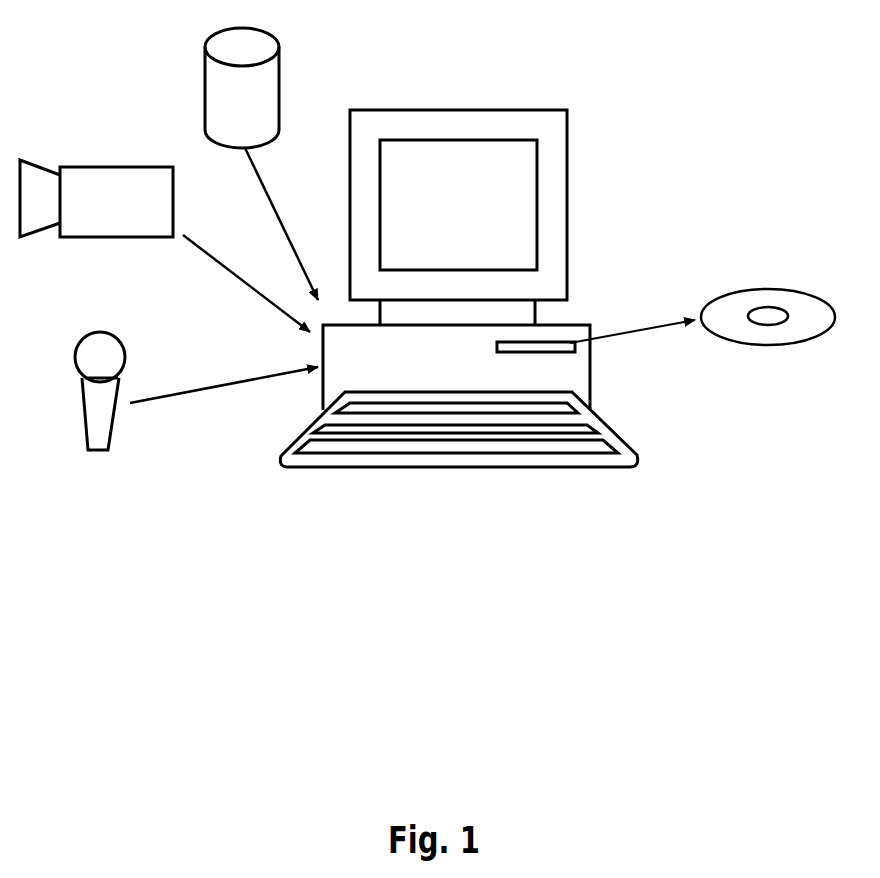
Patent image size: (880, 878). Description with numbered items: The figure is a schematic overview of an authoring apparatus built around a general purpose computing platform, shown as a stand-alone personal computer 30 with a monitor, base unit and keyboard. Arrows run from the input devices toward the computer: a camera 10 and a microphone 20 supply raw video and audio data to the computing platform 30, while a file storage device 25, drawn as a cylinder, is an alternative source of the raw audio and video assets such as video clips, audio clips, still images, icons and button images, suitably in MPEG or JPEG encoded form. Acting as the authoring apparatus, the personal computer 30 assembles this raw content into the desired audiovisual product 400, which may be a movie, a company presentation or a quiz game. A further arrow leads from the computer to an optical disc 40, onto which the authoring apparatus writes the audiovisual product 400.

The camera 10 is at (113, 173).
The microphone 20 is at (108, 348).
The file storage device 25 is at (270, 87).
The personal computer 30 is at (562, 208).
The optical disc 40 is at (797, 292).
The audiovisual product 400 is at (730, 305).